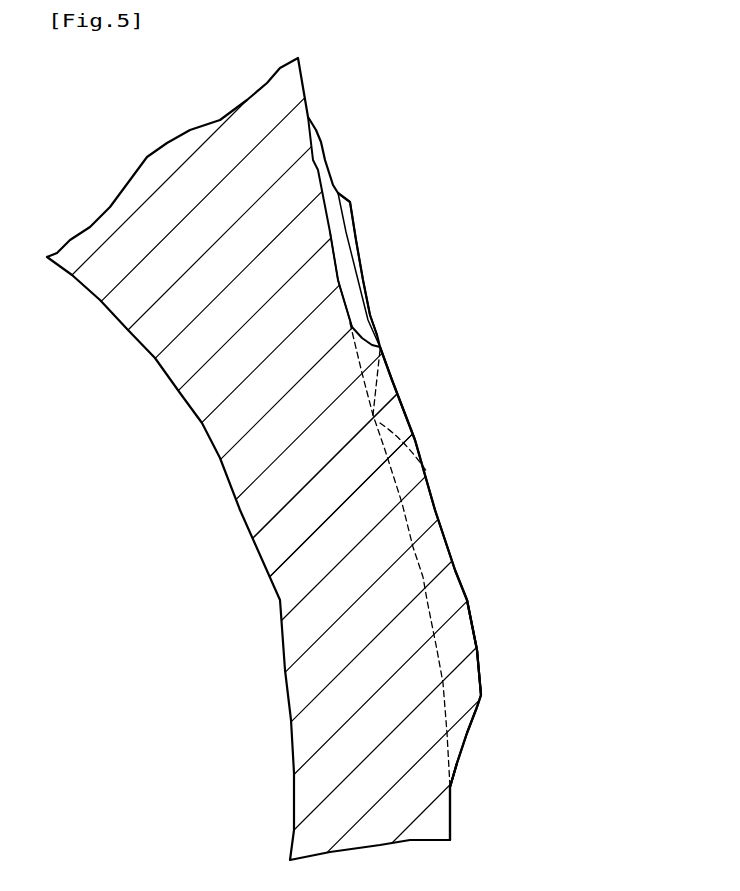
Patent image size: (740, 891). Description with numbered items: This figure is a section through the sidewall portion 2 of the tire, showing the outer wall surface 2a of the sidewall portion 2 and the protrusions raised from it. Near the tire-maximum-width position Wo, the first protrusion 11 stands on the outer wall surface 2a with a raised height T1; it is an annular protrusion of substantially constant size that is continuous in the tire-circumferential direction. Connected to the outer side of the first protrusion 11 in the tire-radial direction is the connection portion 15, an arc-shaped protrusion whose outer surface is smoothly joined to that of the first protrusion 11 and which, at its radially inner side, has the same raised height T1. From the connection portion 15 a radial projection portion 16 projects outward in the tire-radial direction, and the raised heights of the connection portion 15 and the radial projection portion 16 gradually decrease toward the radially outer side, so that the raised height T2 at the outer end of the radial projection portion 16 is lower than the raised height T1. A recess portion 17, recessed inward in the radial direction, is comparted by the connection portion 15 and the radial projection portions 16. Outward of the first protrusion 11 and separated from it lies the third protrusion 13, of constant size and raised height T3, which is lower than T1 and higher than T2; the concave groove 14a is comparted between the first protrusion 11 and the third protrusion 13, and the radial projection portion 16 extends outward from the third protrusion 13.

The sidewall portion 2 is at (411, 329).
The outer wall surface 2a is at (440, 665).
The first protrusion 11 is at (470, 624).
The third protrusion 13 is at (353, 209).
The concave groove 14a is at (385, 425).
The connection portion 15 is at (403, 402).
The radial projection portion 16 is at (332, 162).
The recess portion 17 is at (338, 268).
The raised height of first protrusion T1 is at (395, 570).
The raised height of outer end of radial projection portion T2 is at (287, 140).
The raised height of third protrusion T3 is at (312, 237).
The tire-maximum-width position Wo is at (467, 793).